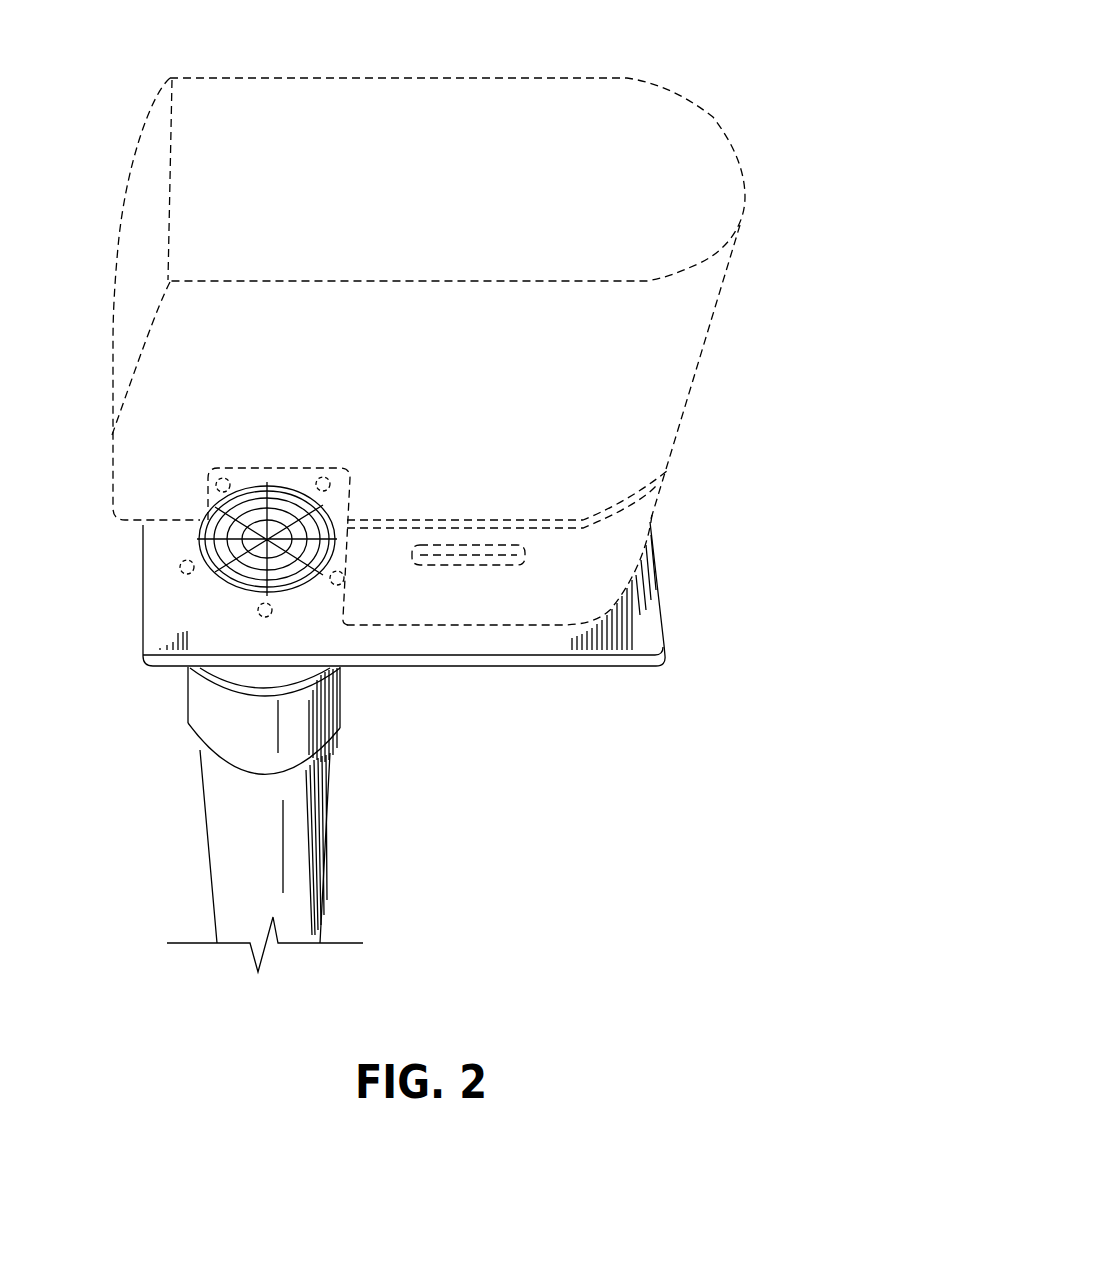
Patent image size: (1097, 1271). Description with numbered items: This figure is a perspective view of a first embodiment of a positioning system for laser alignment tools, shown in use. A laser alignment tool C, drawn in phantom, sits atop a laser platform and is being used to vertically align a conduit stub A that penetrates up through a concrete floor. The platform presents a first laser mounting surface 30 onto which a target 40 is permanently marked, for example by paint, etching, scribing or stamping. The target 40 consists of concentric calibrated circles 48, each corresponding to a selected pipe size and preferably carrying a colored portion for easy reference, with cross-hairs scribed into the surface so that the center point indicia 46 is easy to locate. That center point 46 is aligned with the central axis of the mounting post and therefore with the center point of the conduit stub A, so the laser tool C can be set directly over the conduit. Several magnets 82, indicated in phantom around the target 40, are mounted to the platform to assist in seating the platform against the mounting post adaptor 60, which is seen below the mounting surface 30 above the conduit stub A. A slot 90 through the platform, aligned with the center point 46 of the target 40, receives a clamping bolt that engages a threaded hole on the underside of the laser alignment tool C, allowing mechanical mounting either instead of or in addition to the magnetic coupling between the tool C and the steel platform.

The laser alignment tool C is at (665, 153).
The first laser mounting surface 30 is at (648, 623).
The target 40 is at (252, 575).
The center point indicia 46 is at (268, 533).
The concentric calibrated circles 48 is at (245, 588).
The magnets 82 is at (222, 470).
The slot 90 is at (517, 548).
The mounting post adaptor 60 is at (342, 688).
The conduit stub A is at (323, 863).